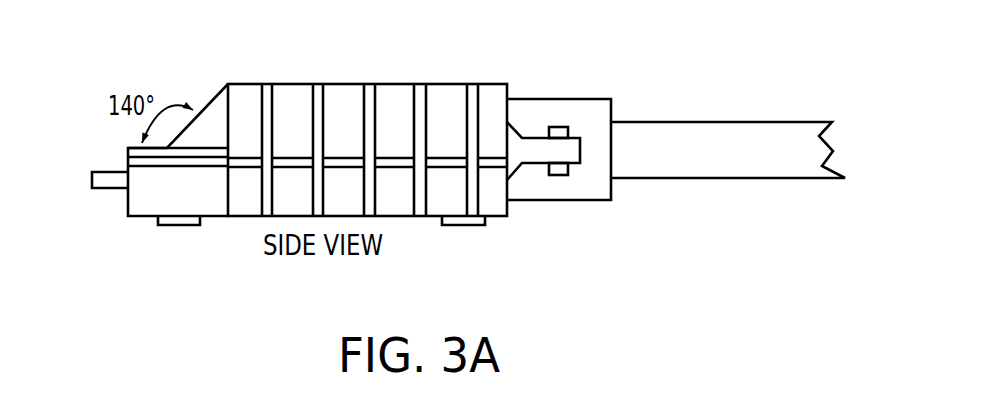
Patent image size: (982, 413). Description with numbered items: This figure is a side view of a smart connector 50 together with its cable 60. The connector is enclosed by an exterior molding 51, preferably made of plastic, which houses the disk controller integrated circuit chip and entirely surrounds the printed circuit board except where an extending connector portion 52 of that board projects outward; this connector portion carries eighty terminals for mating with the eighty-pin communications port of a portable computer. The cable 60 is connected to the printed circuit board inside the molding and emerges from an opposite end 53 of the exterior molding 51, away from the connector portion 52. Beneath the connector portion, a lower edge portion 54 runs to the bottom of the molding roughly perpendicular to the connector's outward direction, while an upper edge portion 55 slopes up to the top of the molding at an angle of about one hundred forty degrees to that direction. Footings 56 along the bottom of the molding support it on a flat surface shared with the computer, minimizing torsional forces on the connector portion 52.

The smart connector 50 is at (508, 296).
The exterior molding 51 is at (305, 82).
The extending connector portion 52 is at (92, 182).
The opposite end 53 is at (508, 210).
The lower edge portion 54 is at (127, 205).
The upper edge portion 55 is at (212, 102).
The footings 56 is at (177, 225).
The cable 60 is at (705, 178).